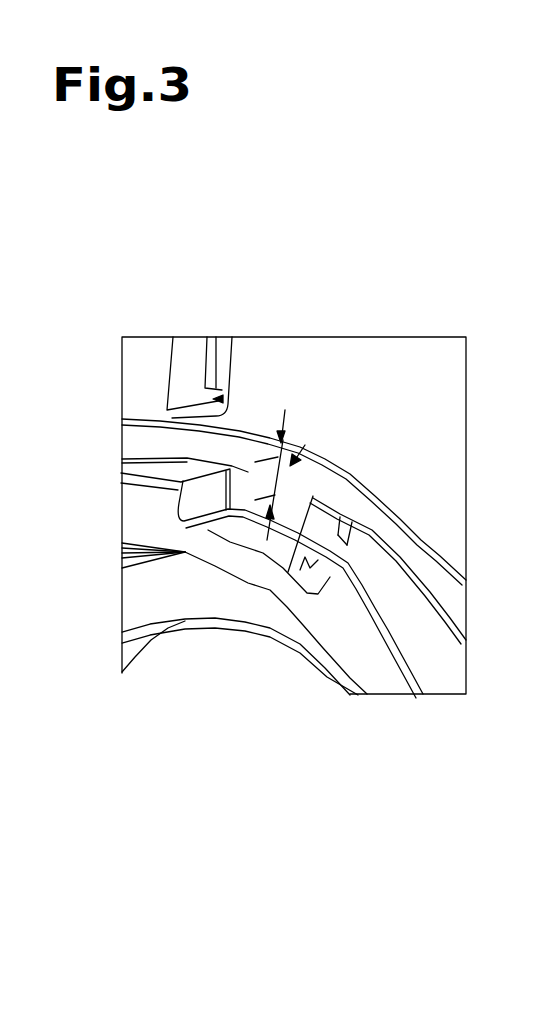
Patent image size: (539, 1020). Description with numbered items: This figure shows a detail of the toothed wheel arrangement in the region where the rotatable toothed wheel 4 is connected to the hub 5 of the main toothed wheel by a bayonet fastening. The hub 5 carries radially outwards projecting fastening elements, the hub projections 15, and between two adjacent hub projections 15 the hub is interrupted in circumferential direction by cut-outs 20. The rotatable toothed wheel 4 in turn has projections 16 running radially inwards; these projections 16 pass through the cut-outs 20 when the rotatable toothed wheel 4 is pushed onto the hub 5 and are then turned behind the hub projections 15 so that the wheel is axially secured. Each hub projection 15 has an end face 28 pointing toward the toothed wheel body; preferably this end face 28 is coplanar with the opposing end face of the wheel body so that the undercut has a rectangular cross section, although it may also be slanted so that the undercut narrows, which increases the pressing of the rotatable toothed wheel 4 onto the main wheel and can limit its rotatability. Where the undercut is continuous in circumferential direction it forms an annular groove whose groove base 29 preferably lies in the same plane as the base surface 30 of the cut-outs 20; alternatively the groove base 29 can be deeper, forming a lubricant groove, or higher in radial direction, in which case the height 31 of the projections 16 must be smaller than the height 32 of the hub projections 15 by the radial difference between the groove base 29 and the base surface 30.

The rotatable toothed wheel 4 is at (175, 335).
The hub 5 is at (246, 516).
The hub projections 15 is at (323, 612).
The projections 16 is at (315, 486).
The cut-outs 20 is at (228, 583).
The end face 28 is at (269, 403).
The groove base 29 is at (317, 540).
The base surface 30 is at (266, 642).
The height 31 is at (344, 420).
The height 32 is at (325, 419).